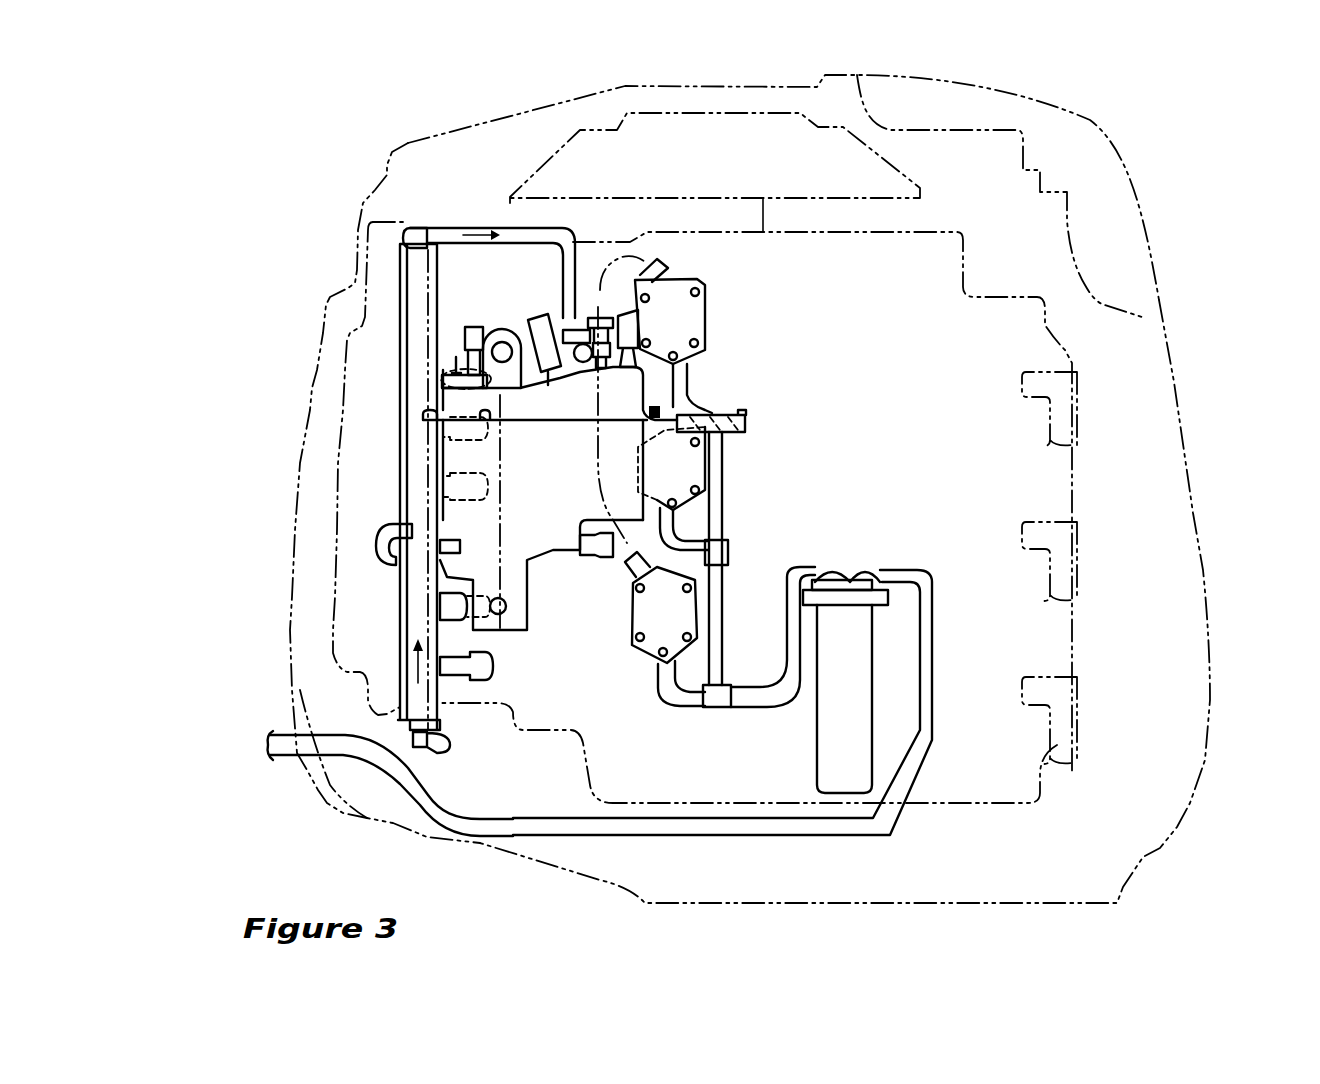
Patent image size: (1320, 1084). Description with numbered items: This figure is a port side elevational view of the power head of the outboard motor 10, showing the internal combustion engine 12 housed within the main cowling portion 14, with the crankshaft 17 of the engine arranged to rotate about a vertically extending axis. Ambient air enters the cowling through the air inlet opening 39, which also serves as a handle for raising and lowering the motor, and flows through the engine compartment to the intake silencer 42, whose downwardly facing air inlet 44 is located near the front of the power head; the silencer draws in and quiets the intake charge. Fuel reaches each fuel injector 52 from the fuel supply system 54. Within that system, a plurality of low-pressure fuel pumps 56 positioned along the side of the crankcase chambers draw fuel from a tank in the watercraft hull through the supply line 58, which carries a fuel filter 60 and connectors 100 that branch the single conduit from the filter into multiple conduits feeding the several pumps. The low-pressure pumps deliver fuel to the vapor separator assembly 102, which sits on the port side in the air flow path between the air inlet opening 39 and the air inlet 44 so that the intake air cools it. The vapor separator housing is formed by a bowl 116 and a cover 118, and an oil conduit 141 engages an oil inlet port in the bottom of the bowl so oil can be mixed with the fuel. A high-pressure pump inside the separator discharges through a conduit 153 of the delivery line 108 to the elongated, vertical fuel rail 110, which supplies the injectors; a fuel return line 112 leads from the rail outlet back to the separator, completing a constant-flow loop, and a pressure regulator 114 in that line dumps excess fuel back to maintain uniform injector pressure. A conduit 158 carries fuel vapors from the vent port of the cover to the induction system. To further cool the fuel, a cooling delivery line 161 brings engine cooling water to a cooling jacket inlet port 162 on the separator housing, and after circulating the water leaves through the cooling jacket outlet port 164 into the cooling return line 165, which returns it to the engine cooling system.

The outboard motor 10 is at (1144, 172).
The internal combustion engine 12 is at (1048, 330).
The main cowling portion 14 is at (1203, 570).
The crankshaft 17 is at (763, 217).
The air inlet opening 39 is at (1047, 170).
The intake silencer 42 is at (300, 758).
The air inlet 44 is at (363, 685).
The fuel injector 52 is at (360, 672).
The fuel supply system 54 is at (558, 751).
The low-pressure fuel pumps 56 is at (695, 318).
The supply line 58 is at (783, 613).
The fuel filter 60 is at (833, 621).
The connectors 100 is at (722, 708).
The vapor separator assembly 102 is at (552, 538).
The delivery line 108 is at (437, 752).
The fuel rail 110 is at (400, 620).
The fuel return line 112 is at (458, 227).
The pressure regulator 114 is at (588, 318).
The bowl 116 is at (455, 460).
The cover 118 is at (440, 392).
The oil conduit 141 is at (600, 560).
The conduit 153 is at (462, 327).
The conduit 158 is at (543, 352).
The cooling delivery line 161 is at (378, 543).
The cooling jacket inlet port 162 is at (407, 563).
The cooling jacket outlet port 164 is at (662, 414).
The cooling return line 165 is at (733, 413).